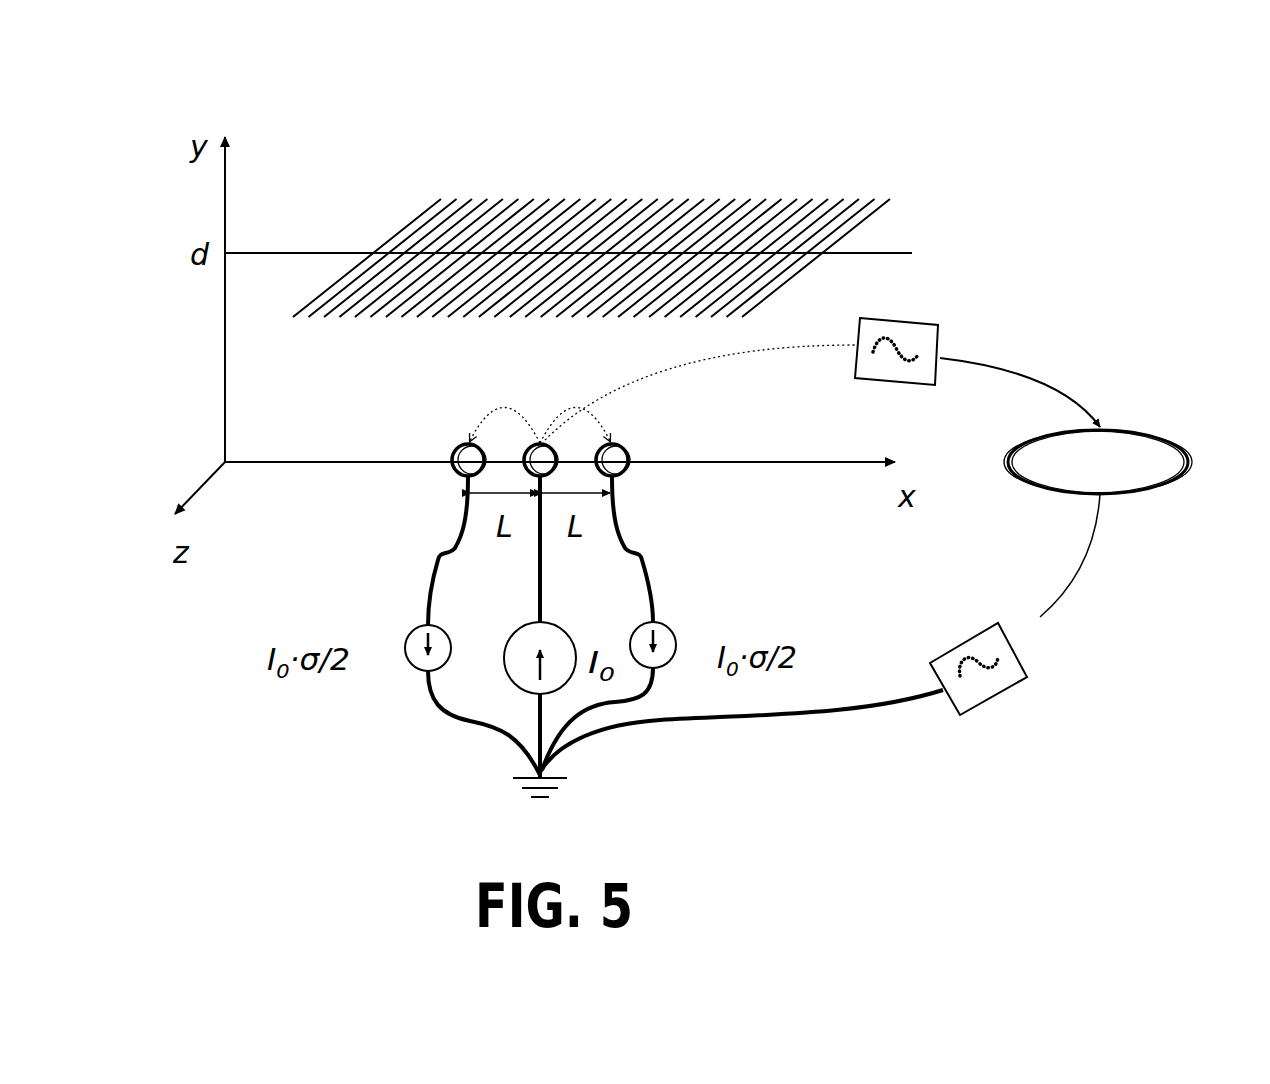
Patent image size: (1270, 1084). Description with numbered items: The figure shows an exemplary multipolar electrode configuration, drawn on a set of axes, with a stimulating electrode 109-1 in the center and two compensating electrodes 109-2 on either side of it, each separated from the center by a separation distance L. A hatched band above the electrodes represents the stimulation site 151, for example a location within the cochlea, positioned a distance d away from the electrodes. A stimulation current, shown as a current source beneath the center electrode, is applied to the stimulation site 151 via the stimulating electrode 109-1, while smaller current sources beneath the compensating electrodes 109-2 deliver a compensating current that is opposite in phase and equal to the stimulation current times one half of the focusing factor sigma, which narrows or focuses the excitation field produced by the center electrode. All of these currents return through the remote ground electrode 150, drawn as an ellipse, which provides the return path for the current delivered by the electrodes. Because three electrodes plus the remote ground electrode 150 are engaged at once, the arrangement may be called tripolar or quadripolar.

The stimulation site 151 is at (774, 172).
The stimulating electrode 109-1 is at (535, 443).
The compensating electrodes 109-2 is at (457, 448).
The remote ground electrode 150 is at (1150, 437).